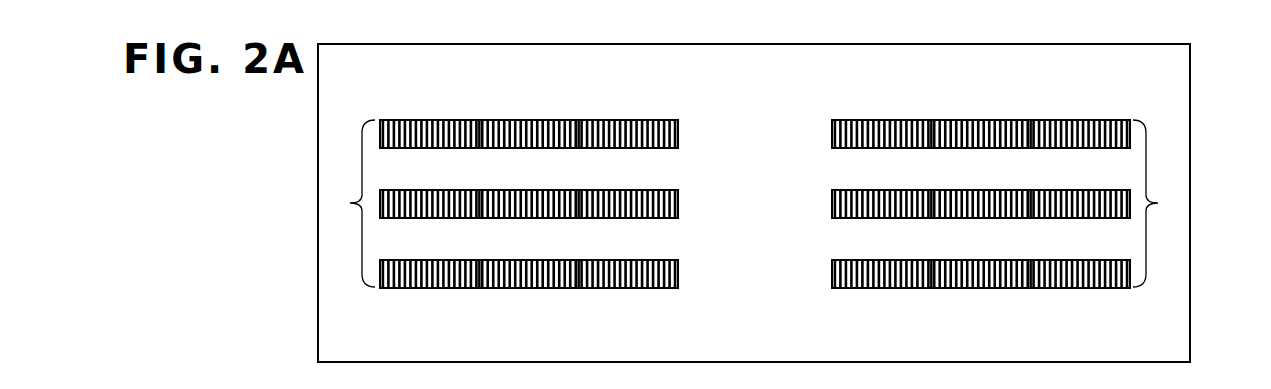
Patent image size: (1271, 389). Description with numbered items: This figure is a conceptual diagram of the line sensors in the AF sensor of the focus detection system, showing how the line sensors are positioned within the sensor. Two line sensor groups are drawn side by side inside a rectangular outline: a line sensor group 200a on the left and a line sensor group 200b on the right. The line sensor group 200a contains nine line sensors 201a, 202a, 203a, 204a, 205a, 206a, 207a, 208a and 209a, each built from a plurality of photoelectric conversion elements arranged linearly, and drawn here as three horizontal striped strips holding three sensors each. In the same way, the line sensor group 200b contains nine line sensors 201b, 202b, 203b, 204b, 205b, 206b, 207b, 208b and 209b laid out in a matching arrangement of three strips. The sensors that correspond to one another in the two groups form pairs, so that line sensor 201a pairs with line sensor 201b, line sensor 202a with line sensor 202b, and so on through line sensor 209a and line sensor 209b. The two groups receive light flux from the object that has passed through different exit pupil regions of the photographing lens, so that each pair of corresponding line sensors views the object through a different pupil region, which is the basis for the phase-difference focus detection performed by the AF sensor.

The line sensor group 200a is at (350, 203).
The line sensor group 200b is at (1158, 203).
The line sensor 201a is at (475, 107).
The line sensor 202a is at (573, 107).
The line sensor 203a is at (673, 107).
The line sensor 204a is at (475, 177).
The line sensor 205a is at (573, 177).
The line sensor 206a is at (673, 177).
The line sensor 207a is at (475, 247).
The line sensor 208a is at (573, 247).
The line sensor 209a is at (673, 247).
The line sensor 201b is at (920, 107).
The line sensor 202b is at (1018, 107).
The line sensor 203b is at (1093, 107).
The line sensor 204b is at (920, 177).
The line sensor 205b is at (1018, 177).
The line sensor 206b is at (1093, 177).
The line sensor 207b is at (920, 247).
The line sensor 208b is at (1018, 247).
The line sensor 209b is at (1093, 247).